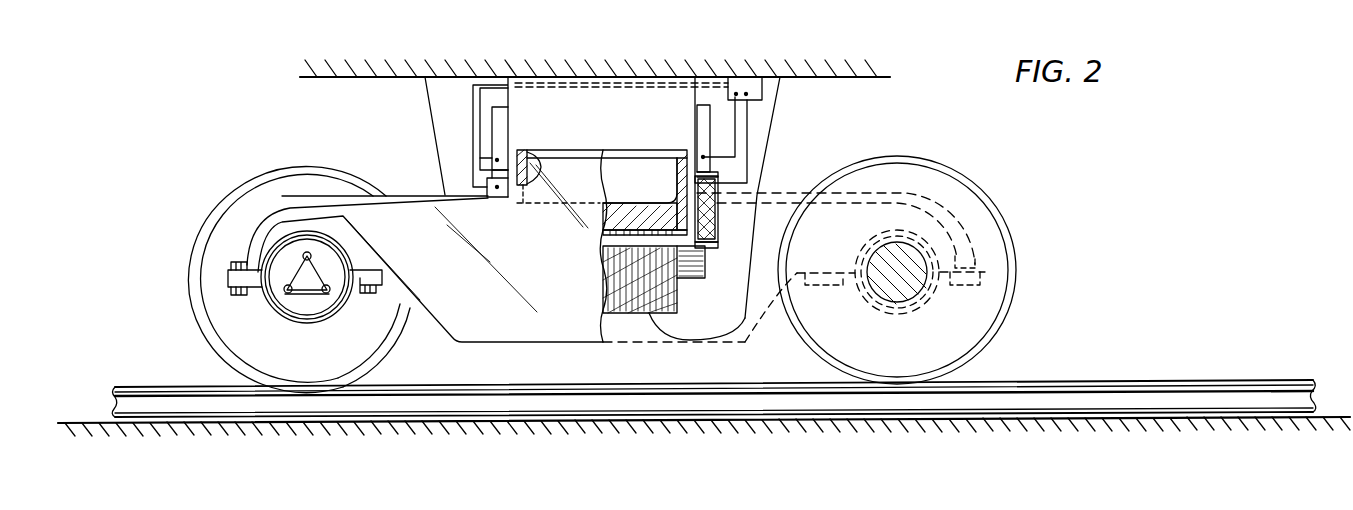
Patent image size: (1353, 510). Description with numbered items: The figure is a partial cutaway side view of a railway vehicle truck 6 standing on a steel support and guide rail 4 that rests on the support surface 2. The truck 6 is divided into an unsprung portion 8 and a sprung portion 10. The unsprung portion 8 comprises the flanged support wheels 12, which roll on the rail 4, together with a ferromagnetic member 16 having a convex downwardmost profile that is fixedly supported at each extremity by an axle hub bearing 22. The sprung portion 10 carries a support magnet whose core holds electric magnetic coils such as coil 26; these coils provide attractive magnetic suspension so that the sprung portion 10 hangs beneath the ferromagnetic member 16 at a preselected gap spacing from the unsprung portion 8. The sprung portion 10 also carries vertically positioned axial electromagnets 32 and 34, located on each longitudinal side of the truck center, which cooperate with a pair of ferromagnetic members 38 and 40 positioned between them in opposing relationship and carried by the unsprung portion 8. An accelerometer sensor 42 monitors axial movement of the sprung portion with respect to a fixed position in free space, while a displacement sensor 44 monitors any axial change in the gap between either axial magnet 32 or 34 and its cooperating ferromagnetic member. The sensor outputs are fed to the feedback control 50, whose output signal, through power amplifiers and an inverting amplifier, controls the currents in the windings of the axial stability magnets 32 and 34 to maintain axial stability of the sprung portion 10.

The support surface 2 is at (632, 428).
The vehicle support and guide rails 4 is at (747, 386).
The vehicle truck 6 is at (832, 88).
The unsprung portion 8 is at (462, 344).
The sprung portion 10 is at (768, 132).
The flanged support wheels 12 is at (240, 187).
The ferromagnetic member 16 is at (632, 207).
The axle hub bearing 22 is at (258, 294).
The electric magnetic coil 26 is at (697, 282).
The axial electromagnet 32 is at (500, 196).
The axial electromagnet 34 is at (713, 217).
The ferromagnetic member 38 is at (538, 170).
The ferromagnetic member 40 is at (680, 172).
The accelerometer sensor 42 is at (498, 160).
The displacement sensor 44 is at (705, 157).
The feedback control 50 is at (750, 82).